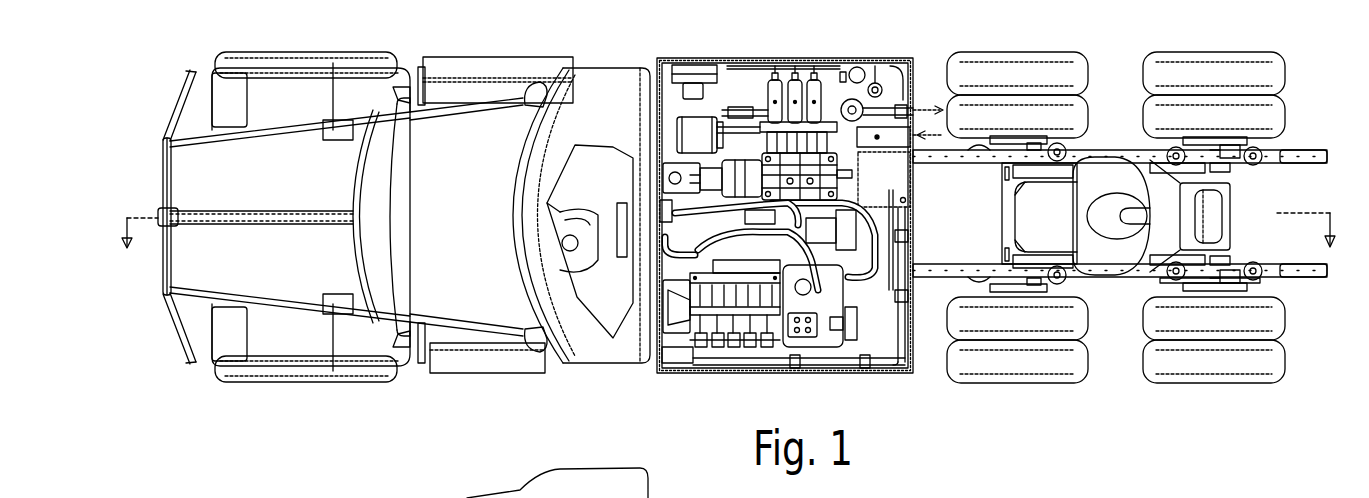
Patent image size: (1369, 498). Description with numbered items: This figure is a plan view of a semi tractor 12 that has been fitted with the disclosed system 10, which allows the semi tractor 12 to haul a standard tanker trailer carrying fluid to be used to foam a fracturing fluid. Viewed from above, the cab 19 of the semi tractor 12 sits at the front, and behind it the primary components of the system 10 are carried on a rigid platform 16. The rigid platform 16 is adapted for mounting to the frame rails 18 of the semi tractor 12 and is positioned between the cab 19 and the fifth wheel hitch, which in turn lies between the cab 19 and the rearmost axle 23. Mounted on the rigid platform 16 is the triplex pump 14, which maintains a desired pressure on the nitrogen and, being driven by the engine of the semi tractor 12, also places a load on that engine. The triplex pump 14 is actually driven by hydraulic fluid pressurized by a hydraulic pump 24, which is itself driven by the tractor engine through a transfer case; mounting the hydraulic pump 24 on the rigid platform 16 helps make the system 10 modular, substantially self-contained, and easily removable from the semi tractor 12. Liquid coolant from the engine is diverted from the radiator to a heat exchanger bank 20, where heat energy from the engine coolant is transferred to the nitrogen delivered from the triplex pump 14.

The system 10 is at (823, 53).
The semi tractor 12 is at (395, 416).
The triplex pump 14 is at (755, 63).
The rigid platform 16 is at (886, 321).
The frame rails 18 is at (1090, 275).
The cab 19 is at (595, 368).
The heat exchanger bank 20 is at (770, 221).
The rearmost axle 23 is at (1213, 287).
The hydraulic pump 24 is at (662, 62).